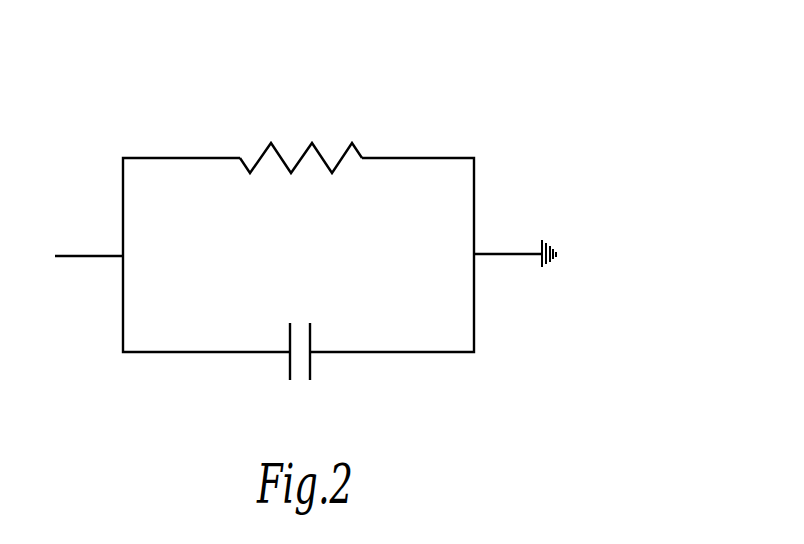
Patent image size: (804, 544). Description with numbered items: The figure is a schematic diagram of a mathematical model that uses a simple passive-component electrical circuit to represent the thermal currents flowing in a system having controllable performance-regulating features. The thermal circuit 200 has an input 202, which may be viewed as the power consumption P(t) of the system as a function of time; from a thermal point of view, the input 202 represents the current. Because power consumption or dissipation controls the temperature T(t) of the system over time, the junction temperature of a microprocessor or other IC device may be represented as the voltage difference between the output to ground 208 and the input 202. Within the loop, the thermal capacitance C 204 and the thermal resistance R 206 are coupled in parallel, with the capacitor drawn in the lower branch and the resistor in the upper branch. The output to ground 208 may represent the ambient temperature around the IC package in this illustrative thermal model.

The thermal circuit 200 is at (528, 90).
The input 202 is at (89, 253).
The thermal capacitance 204 is at (311, 329).
The thermal resistance 206 is at (268, 142).
The output to ground 208 is at (556, 250).